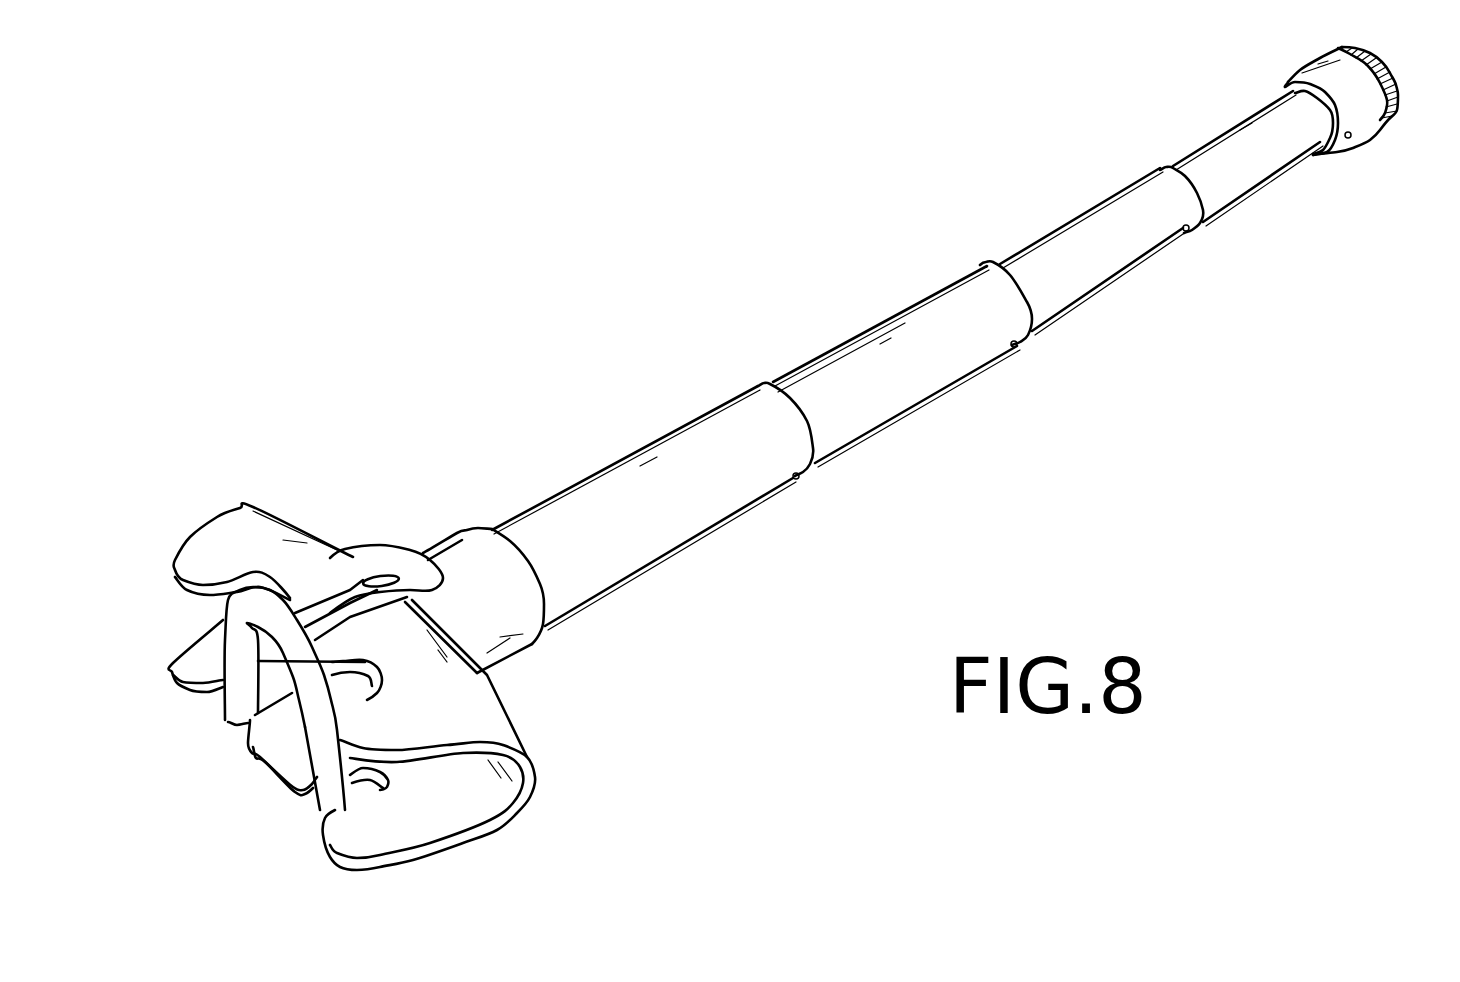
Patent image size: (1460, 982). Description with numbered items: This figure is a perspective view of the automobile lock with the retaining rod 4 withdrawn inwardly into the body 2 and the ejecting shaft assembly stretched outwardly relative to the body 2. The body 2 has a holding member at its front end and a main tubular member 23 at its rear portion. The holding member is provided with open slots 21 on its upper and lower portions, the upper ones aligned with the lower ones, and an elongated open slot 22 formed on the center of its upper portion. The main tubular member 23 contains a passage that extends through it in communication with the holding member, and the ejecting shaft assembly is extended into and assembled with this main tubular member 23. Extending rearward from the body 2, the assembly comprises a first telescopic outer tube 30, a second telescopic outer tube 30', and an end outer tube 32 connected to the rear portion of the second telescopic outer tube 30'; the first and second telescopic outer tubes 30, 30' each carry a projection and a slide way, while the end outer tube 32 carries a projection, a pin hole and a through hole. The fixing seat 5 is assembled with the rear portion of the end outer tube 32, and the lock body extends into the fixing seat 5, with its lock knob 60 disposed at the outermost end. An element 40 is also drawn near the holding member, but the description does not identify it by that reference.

The body 2 is at (473, 560).
The retaining rod 4 is at (376, 557).
The fixing seat 5 is at (1352, 120).
The open slots 21 is at (310, 802).
The elongated open slot 22 is at (357, 608).
The main tubular member 23 is at (617, 550).
The first telescopic outer tube 30 is at (902, 379).
The second telescopic outer tube 30' is at (1101, 265).
The end outer tube 32 is at (1255, 170).
The plate 40 is at (313, 730).
The lock knob 60 is at (1398, 97).